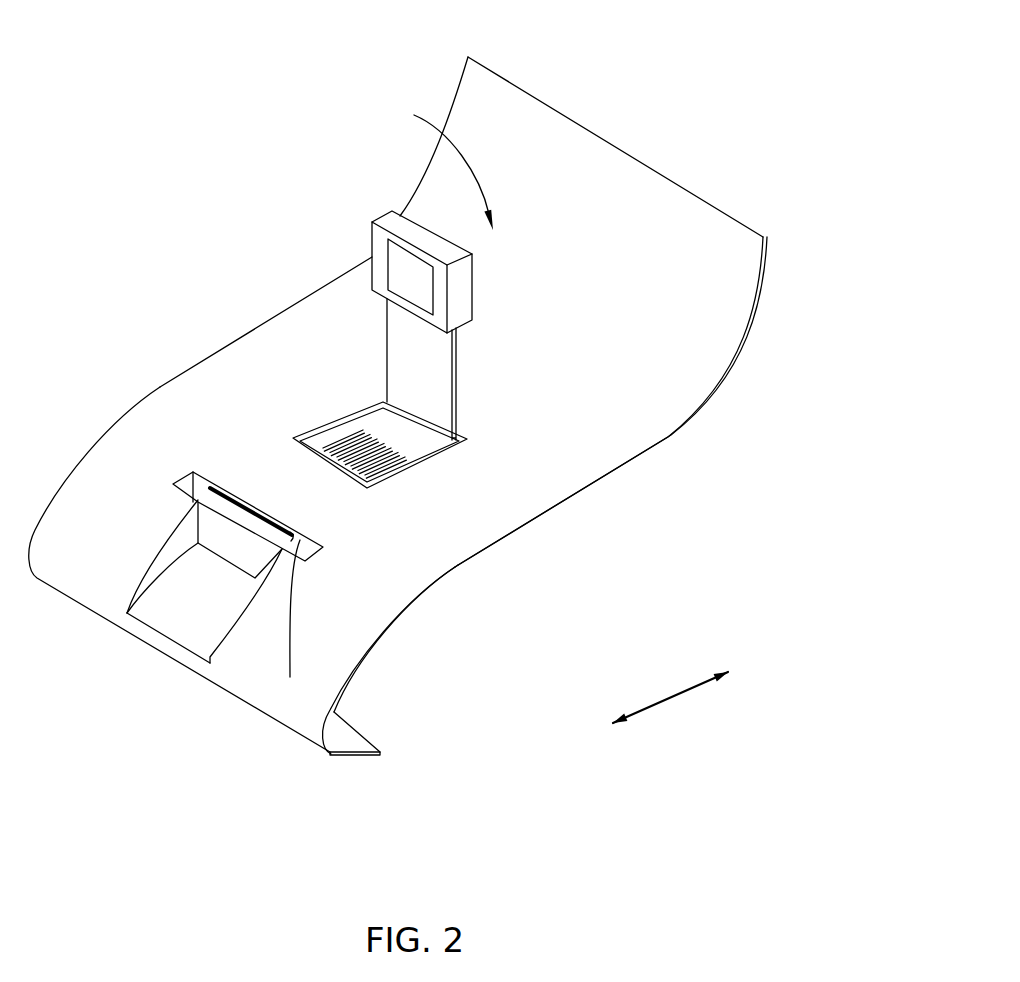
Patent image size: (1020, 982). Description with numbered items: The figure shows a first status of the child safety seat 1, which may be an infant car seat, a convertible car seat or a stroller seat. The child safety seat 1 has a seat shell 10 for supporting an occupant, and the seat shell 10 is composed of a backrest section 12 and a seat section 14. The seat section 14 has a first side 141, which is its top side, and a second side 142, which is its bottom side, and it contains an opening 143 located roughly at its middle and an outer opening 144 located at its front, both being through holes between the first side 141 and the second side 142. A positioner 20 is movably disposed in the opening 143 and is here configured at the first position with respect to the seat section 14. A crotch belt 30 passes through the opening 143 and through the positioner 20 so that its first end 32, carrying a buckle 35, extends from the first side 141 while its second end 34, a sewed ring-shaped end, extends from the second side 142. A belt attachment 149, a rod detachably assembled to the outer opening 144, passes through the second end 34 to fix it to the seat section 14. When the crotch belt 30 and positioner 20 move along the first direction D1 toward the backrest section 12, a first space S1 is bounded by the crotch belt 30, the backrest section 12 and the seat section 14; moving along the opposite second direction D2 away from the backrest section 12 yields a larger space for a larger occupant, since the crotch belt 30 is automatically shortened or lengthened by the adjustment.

The child safety seat 1 is at (647, 82).
The seat shell 10 is at (667, 598).
The backrest section 12 is at (687, 372).
The seat section 14 is at (478, 532).
The first side 141 is at (364, 630).
The second side 142 is at (406, 634).
The opening 143 is at (387, 438).
The outer opening 144 is at (154, 604).
The belt attachment 149 is at (292, 643).
The positioner 20 is at (306, 413).
The crotch belt 30 is at (407, 393).
The first end 32 is at (398, 316).
The second end 34 is at (247, 508).
The buckle 35 is at (400, 214).
The first space S1 is at (441, 166).
The first direction D1 is at (682, 697).
The second direction D2 is at (630, 734).